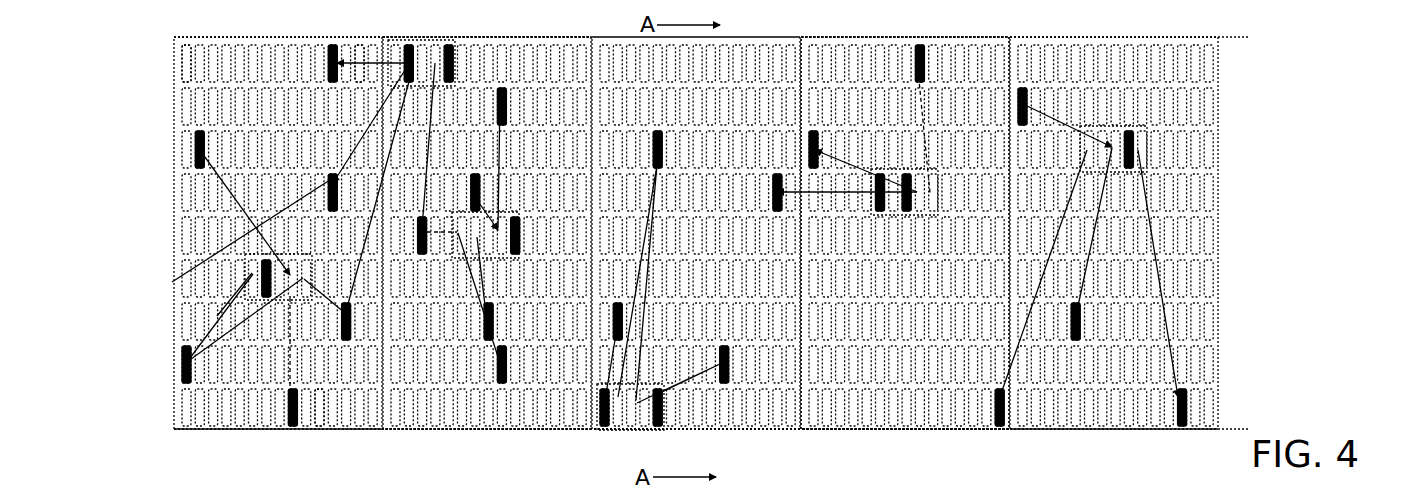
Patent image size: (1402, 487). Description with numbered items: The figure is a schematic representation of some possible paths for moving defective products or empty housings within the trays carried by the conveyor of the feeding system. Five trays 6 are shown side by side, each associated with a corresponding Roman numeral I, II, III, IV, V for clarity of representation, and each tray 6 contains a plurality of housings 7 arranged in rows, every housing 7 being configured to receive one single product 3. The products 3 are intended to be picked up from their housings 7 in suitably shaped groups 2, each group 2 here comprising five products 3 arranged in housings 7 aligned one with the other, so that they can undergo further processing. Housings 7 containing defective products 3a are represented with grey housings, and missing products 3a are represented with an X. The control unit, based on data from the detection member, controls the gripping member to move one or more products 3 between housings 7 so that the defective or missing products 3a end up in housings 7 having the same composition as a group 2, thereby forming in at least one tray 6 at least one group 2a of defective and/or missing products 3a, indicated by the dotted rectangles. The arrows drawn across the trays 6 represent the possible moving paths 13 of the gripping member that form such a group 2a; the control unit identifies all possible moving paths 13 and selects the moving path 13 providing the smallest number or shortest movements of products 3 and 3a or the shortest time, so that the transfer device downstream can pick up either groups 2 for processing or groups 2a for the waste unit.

The group of products 2 is at (823, 486).
The group of defective and/or missing products 2a is at (992, 432).
The product 3 is at (372, 44).
The defective or missing product 3a is at (410, 43).
The tray 6 is at (255, 430).
The housing 7 is at (523, 41).
The moving path 13 is at (217, 315).
The Roman numeral I is at (328, 430).
The Roman numeral II is at (467, 430).
The Roman numeral III is at (677, 430).
The Roman numeral IV is at (897, 430).
The Roman numeral V is at (1085, 430).